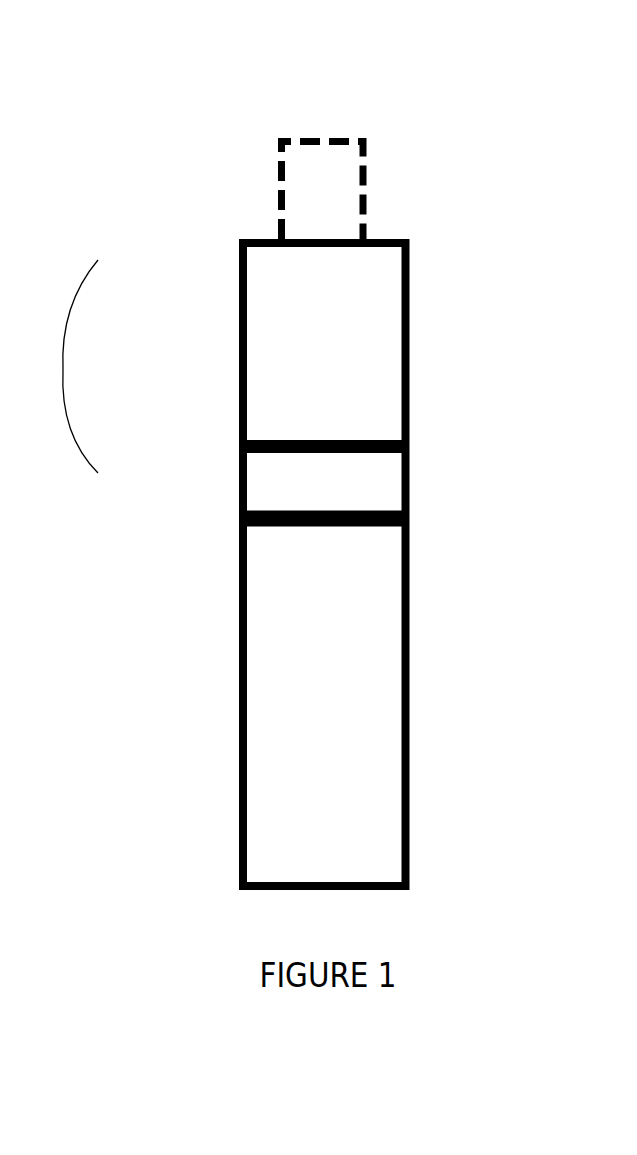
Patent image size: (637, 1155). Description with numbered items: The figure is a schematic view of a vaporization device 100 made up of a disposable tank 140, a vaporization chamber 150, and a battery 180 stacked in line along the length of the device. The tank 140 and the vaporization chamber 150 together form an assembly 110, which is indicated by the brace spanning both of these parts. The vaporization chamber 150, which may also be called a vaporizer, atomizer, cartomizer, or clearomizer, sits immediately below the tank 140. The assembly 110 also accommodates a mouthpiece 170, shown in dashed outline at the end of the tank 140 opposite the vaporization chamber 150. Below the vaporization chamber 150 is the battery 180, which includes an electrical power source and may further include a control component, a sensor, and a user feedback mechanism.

The vaporization device 100 is at (461, 81).
The assembly 110 is at (63, 370).
The disposable tank 140 is at (263, 348).
The vaporization chamber 150 is at (263, 487).
The mouthpiece 170 is at (300, 162).
The battery 180 is at (383, 687).